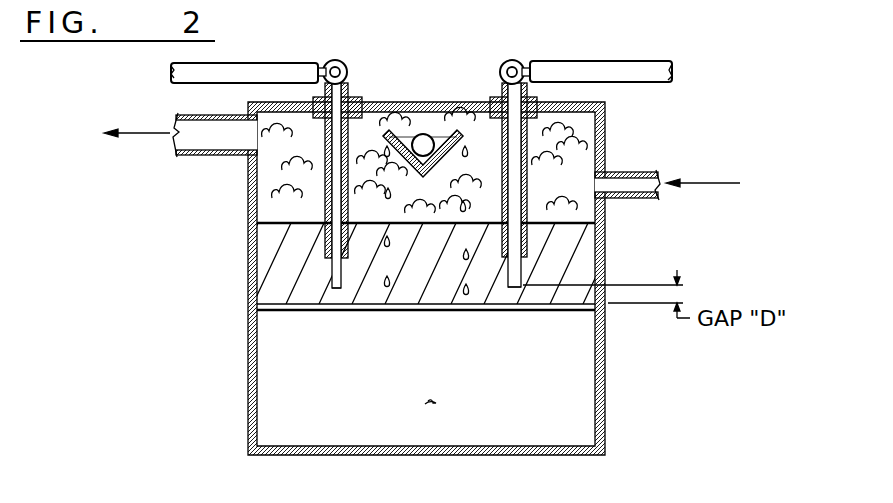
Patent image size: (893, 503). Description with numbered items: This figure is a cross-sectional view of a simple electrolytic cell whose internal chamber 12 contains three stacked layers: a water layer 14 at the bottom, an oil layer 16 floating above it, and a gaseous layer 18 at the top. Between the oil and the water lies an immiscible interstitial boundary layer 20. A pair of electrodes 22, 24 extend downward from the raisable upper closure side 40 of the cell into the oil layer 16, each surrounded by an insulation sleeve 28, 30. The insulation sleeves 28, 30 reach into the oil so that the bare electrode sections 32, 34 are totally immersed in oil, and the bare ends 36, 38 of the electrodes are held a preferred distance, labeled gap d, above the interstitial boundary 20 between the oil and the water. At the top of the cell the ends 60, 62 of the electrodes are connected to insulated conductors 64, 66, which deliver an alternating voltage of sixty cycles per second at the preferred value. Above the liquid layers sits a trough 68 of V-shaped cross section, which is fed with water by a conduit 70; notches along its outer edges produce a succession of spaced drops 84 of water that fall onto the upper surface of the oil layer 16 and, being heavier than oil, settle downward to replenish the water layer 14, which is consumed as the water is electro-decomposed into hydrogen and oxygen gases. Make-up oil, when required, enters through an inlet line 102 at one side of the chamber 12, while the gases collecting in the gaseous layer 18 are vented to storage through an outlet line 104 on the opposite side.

The internal chamber 12 is at (596, 330).
The water layer 14 is at (435, 405).
The oil layer 16 is at (268, 288).
The gaseous layer 18 is at (275, 195).
The immissible boundary layer 20 is at (452, 309).
The electrode 22 is at (325, 61).
The electrode 24 is at (522, 60).
The insulation sleeve 28 is at (325, 185).
The insulation sleeve 30 is at (524, 156).
The bare electrode section 32 is at (332, 275).
The bare electrode section 34 is at (523, 268).
The bare end 36 is at (337, 290).
The bare end 38 is at (515, 290).
The raisable upper closure side 40 is at (450, 102).
The electrode end 60 is at (337, 60).
The electrode end 62 is at (512, 58).
The insulated conductor 64 is at (247, 70).
The insulated conductor 66 is at (628, 70).
The V-shaped cross section trough 68 is at (400, 140).
The conduit 70 is at (423, 134).
The spaced drops 84 is at (380, 290).
The inlet line 102 is at (640, 172).
The outlet line 104 is at (195, 113).